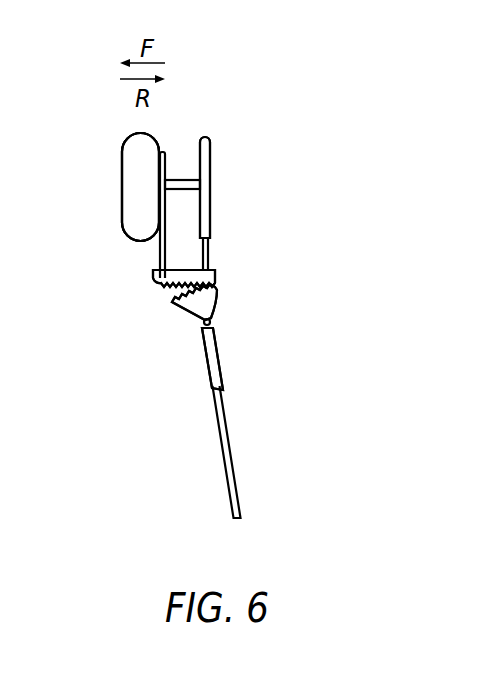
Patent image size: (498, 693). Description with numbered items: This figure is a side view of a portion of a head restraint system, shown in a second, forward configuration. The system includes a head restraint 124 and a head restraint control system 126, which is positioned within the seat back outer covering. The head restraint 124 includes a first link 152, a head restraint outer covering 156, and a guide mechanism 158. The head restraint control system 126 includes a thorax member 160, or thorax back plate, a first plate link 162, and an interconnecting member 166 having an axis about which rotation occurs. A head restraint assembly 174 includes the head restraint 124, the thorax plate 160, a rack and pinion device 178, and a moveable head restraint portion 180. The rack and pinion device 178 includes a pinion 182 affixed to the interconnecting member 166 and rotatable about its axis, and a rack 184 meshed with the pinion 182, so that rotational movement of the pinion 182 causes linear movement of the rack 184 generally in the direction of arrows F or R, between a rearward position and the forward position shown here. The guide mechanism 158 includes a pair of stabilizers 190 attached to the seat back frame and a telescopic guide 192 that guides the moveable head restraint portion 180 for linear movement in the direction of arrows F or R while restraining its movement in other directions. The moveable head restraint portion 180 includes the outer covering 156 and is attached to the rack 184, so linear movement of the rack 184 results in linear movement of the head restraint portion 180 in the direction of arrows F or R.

The head restraint 124 is at (99, 187).
The head restraint control system 126 is at (256, 217).
The first link 152 is at (116, 215).
The head restraint outer covering 156 is at (99, 183).
The guide mechanism 158 is at (270, 172).
The thorax member 160 is at (258, 452).
The first plate link 162 is at (243, 367).
The interconnecting member 166 is at (259, 340).
The head restraint assembly 174 is at (140, 373).
The rack and pinion device 178 is at (243, 302).
The moveable head restraint portion 180 is at (179, 161).
The pinion 182 is at (154, 309).
The rack 184 is at (225, 264).
The stabilizers 190 is at (244, 203).
The telescopic guide 192 is at (226, 121).